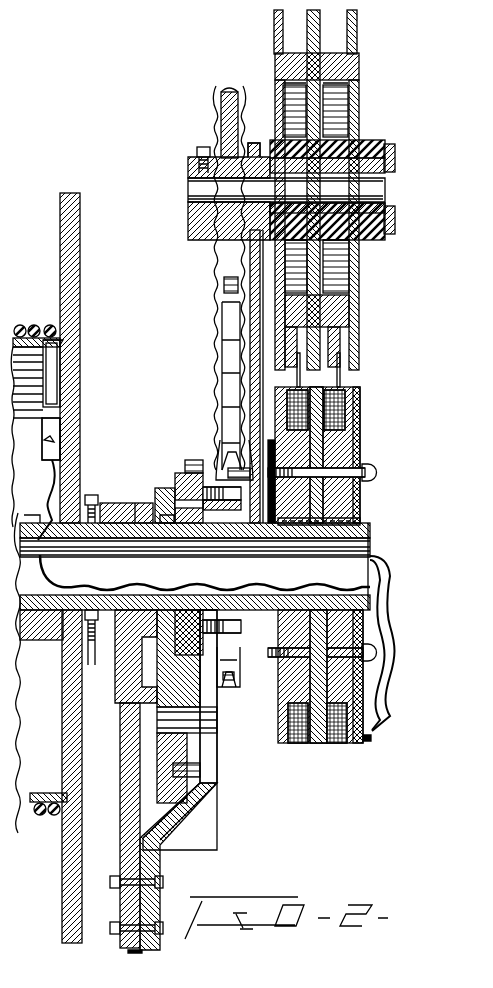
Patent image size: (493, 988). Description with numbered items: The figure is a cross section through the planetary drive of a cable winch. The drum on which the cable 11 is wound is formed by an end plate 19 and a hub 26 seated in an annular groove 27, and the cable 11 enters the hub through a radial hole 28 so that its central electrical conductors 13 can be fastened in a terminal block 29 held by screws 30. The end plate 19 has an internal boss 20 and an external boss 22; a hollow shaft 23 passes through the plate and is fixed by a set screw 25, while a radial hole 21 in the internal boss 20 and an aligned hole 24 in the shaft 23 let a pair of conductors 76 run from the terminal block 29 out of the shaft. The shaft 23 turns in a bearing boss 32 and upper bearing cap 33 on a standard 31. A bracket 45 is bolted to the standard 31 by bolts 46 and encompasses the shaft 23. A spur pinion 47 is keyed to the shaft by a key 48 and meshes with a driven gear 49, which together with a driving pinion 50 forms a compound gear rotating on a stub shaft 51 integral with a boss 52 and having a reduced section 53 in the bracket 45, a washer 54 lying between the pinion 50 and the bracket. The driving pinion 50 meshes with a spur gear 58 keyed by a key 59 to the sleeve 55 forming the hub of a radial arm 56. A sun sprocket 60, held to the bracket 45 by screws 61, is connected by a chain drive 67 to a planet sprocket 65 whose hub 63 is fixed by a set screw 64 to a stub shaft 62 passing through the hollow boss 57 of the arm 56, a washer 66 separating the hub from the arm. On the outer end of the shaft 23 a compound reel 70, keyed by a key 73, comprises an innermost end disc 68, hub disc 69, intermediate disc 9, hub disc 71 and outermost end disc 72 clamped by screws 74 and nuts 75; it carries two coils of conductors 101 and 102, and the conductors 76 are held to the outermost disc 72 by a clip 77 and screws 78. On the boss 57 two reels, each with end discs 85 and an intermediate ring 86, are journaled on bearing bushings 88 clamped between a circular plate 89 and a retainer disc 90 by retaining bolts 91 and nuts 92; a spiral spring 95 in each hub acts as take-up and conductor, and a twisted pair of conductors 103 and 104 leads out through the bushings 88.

The intermediate disc 9 is at (318, 744).
The cable 11 is at (52, 372).
The electrical conductors 13 is at (50, 325).
The end plate 19 is at (80, 242).
The internal boss 20 is at (25, 513).
The radial hole 21 is at (92, 494).
The external boss 22 is at (110, 505).
The hollow shaft 23 is at (33, 630).
The aligned hole 24 is at (42, 545).
The set screw 25 is at (100, 500).
The hub 26 is at (43, 793).
The annular groove 27 is at (82, 778).
The radial hole 28 is at (63, 342).
The terminal block 29 is at (50, 442).
The screw 30 is at (80, 444).
The standard 31 is at (127, 967).
The bearing boss 32 is at (98, 635).
The upper bearing cap 33 is at (142, 503).
The bracket 45 is at (185, 830).
The bolt 46 is at (163, 929).
The spur pinion 47 is at (164, 487).
The key 48 is at (164, 523).
The driven gear 49 is at (120, 812).
The driving pinion 50 is at (217, 797).
The stub shaft 51 is at (200, 736).
The boss 52 is at (150, 700).
The reduced section 53 is at (205, 718).
The washer 54 is at (205, 748).
The sleeve 55 is at (238, 517).
The radial arm 56 is at (260, 317).
The hollow boss 57 is at (385, 198).
The spur gear 58 is at (190, 460).
The key 59 is at (190, 510).
The sun sprocket 60 is at (231, 680).
The screw 61 is at (268, 557).
The stub shaft 62 is at (188, 188).
The hub 63 is at (188, 169).
The set screw 64 is at (202, 146).
The planet sprocket 65 is at (229, 90).
The washer 66 is at (254, 142).
The chain drive 67 is at (216, 355).
The innermost end disc 68 is at (283, 744).
The hub disc 69 is at (335, 440).
The compound reel 70 is at (375, 497).
The hub disc 71 is at (345, 452).
The outermost end disc 72 is at (356, 744).
The key 73 is at (365, 512).
The screw 74 is at (370, 472).
The nut 75 is at (267, 478).
The conductors 76 is at (292, 595).
The clip 77 is at (372, 735).
The screw 78 is at (372, 742).
The end disc 85 is at (292, 66).
The intermediate ring 86 is at (340, 320).
The bearing bushing 88 is at (360, 132).
The circular plate 89 is at (300, 120).
The retainer disc 90 is at (371, 145).
The retaining bolt 91 is at (306, 212).
The nut 92 is at (393, 160).
The spiral spring 95 is at (292, 100).
The coil of conductors 101 is at (354, 42).
The coil of conductors 102 is at (282, 44).
The conductor 103 is at (345, 262).
The conductor 104 is at (345, 278).